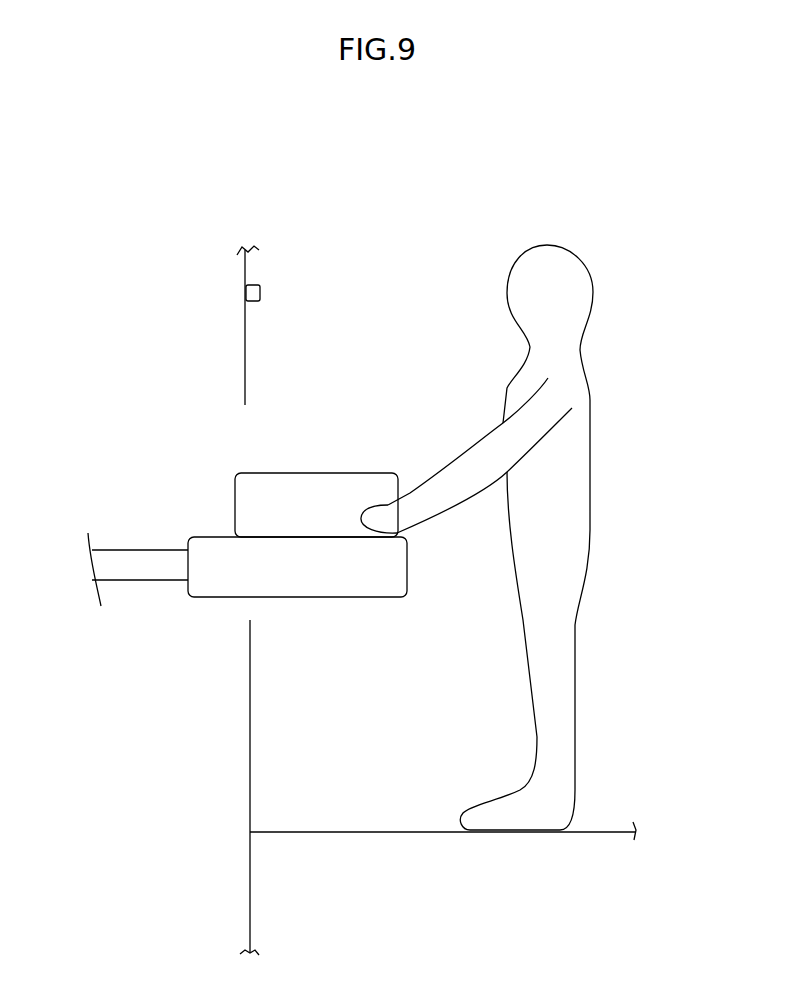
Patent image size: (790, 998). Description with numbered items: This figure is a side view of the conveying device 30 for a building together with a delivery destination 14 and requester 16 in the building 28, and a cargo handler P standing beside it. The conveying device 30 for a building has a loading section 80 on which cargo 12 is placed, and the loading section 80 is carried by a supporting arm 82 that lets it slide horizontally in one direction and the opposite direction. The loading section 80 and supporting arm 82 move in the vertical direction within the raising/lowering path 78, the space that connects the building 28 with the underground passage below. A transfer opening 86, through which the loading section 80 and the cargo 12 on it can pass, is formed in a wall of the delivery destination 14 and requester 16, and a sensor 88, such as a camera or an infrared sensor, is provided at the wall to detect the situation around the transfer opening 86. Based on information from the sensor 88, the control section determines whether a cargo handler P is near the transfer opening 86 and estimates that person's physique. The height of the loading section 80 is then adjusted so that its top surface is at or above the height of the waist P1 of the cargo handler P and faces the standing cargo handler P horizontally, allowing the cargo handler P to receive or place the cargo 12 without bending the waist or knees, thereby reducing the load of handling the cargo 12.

The conveying device for a building 30 is at (122, 262).
The building 28 is at (335, 225).
The delivery destination 14 is at (440, 237).
The requester 16 is at (403, 275).
The raising/lowering path 78 is at (117, 432).
The transfer opening 86 is at (245, 405).
The sensor 88 is at (262, 293).
The cargo 12 is at (318, 472).
The loading section 80 is at (228, 598).
The supporting arm 82 is at (145, 582).
The cargo handler P is at (578, 250).
The waist P1 is at (578, 538).